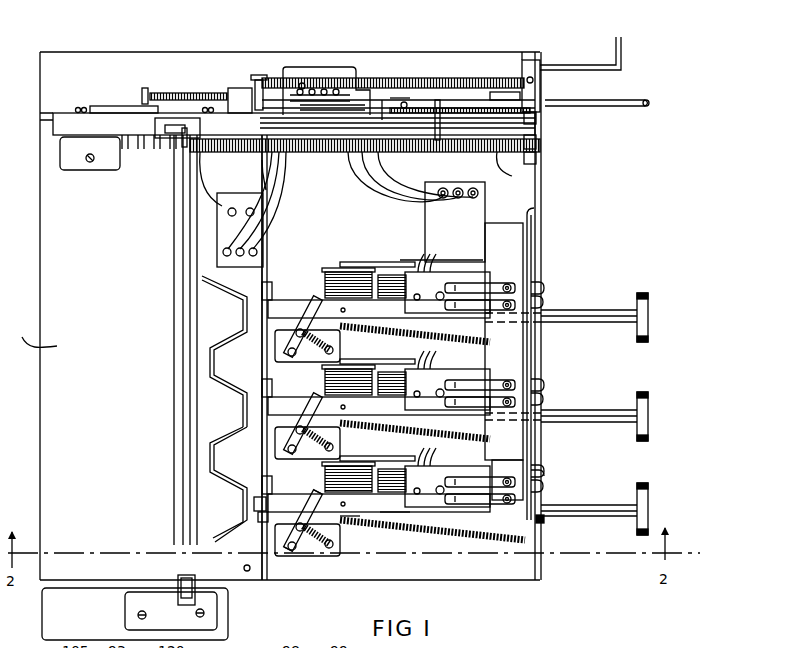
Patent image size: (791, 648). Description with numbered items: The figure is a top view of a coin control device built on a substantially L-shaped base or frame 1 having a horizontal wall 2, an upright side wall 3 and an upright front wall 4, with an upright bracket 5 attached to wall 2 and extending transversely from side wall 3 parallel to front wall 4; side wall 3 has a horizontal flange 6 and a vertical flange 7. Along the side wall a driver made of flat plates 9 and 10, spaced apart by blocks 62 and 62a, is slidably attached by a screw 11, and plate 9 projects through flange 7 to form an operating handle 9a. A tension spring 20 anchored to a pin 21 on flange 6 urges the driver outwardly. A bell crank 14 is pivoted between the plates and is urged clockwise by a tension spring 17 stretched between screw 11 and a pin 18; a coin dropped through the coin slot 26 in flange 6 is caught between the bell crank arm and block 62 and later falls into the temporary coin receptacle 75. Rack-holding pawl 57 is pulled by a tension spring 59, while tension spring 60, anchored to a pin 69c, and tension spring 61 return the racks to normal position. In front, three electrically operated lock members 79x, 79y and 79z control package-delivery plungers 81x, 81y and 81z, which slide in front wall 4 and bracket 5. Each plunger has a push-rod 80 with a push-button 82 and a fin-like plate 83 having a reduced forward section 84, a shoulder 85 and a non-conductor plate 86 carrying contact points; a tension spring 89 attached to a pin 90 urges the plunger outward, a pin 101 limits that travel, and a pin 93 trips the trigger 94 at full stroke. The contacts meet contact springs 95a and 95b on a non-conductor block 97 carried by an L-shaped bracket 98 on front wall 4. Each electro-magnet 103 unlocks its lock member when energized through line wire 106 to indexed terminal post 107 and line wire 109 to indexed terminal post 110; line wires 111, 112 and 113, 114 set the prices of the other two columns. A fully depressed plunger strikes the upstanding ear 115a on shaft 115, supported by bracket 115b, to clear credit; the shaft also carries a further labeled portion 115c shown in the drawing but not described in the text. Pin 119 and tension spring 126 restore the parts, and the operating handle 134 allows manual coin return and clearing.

The base or frame 1 is at (480, 42).
The horizontal wall 2 is at (32, 335).
The upright side wall 3 is at (393, 100).
The upright front wall 4 is at (542, 206).
The upright bracket 5 is at (271, 278).
The horizontal flange 6 is at (330, 68).
The vertical flange 7 is at (541, 98).
The flat plate 9 is at (496, 100).
The operating handle 9a is at (604, 100).
The flat plate 10 is at (464, 107).
The screw 11 is at (301, 84).
The bell crank 14 is at (438, 140).
The tension spring 17 is at (387, 107).
The pin 18 is at (404, 110).
The tension spring 20 is at (540, 58).
The pin 21 is at (541, 73).
The coin slot 26 is at (327, 108).
The pawl 57 is at (48, 644).
The tension spring 59 is at (228, 144).
The tension spring 60 is at (512, 176).
The tension spring 61 is at (541, 143).
The spacing block 62 is at (258, 86).
The spacing block 62a is at (544, 116).
The pin 69c is at (541, 160).
The temporary coin receptacle 75 is at (232, 90).
The lock member 79x is at (282, 487).
The lock member 79y is at (282, 391).
The lock member 79z is at (282, 293).
The push-rod 80 is at (397, 514).
The package-delivery plunger 81x is at (599, 492).
The package-delivery plunger 81y is at (599, 403).
The package-delivery plunger 81z is at (588, 310).
The push-button 82 is at (649, 506).
The fin-like plate 83 is at (330, 500).
The reduced forward section 84 is at (262, 518).
The shoulder 85 is at (255, 506).
The non-conductor plate 86 is at (446, 476).
The tension spring 89 is at (467, 535).
The pin 90 is at (347, 520).
The pin 93 is at (346, 503).
The operating arm or trigger 94 is at (303, 546).
The contact spring 95a is at (538, 474).
The contact spring 95b is at (486, 486).
The block 97 is at (497, 443).
The L-shaped bracket 98 is at (533, 371).
The pin 101 is at (545, 520).
The electro-magnet 103 is at (355, 470).
The line wire 106 is at (198, 198).
The indexed terminal post 107 is at (267, 260).
The line wire 109 is at (386, 160).
The indexed terminal post 110 is at (440, 198).
The line wire 111 is at (262, 180).
The line wire 112 is at (404, 190).
The line wire 113 is at (278, 191).
The line wire 114 is at (362, 186).
The shaft 115 is at (180, 362).
The upstanding ear 115a is at (228, 345).
The bracket 115b is at (128, 620).
The zigzag bracket lower 115c is at (223, 480).
The pin 119 is at (142, 94).
The tension spring 126 is at (172, 95).
The operating handle 134 is at (622, 58).